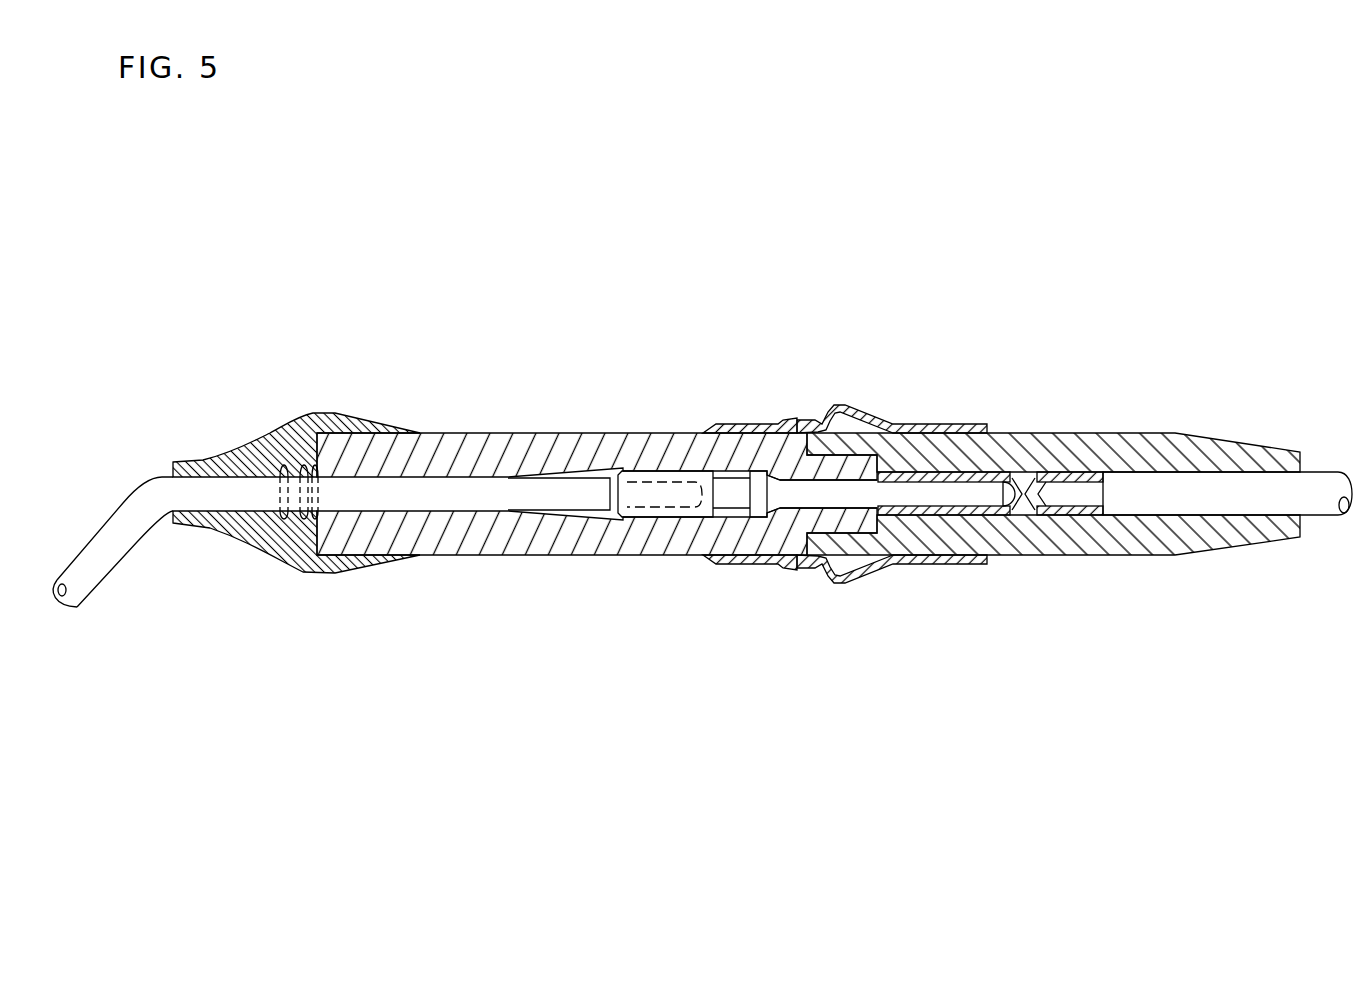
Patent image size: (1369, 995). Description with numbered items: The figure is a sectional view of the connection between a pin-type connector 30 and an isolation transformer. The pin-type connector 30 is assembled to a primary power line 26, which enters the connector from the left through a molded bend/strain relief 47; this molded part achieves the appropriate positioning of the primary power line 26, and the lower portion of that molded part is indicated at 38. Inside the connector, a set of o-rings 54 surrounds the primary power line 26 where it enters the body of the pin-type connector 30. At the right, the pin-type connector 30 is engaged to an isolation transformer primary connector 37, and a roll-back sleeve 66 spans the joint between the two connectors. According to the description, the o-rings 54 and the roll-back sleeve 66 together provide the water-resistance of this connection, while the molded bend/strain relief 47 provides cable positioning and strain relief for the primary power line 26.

The primary power line 26 is at (109, 590).
The pin-type connector 30 is at (448, 425).
The isolation transformer primary connector 37 is at (1118, 438).
The boot 38 is at (374, 545).
The molded bend/strain relief 47 is at (321, 397).
The o-rings 54 is at (281, 434).
The roll-back sleeve 66 is at (953, 402).